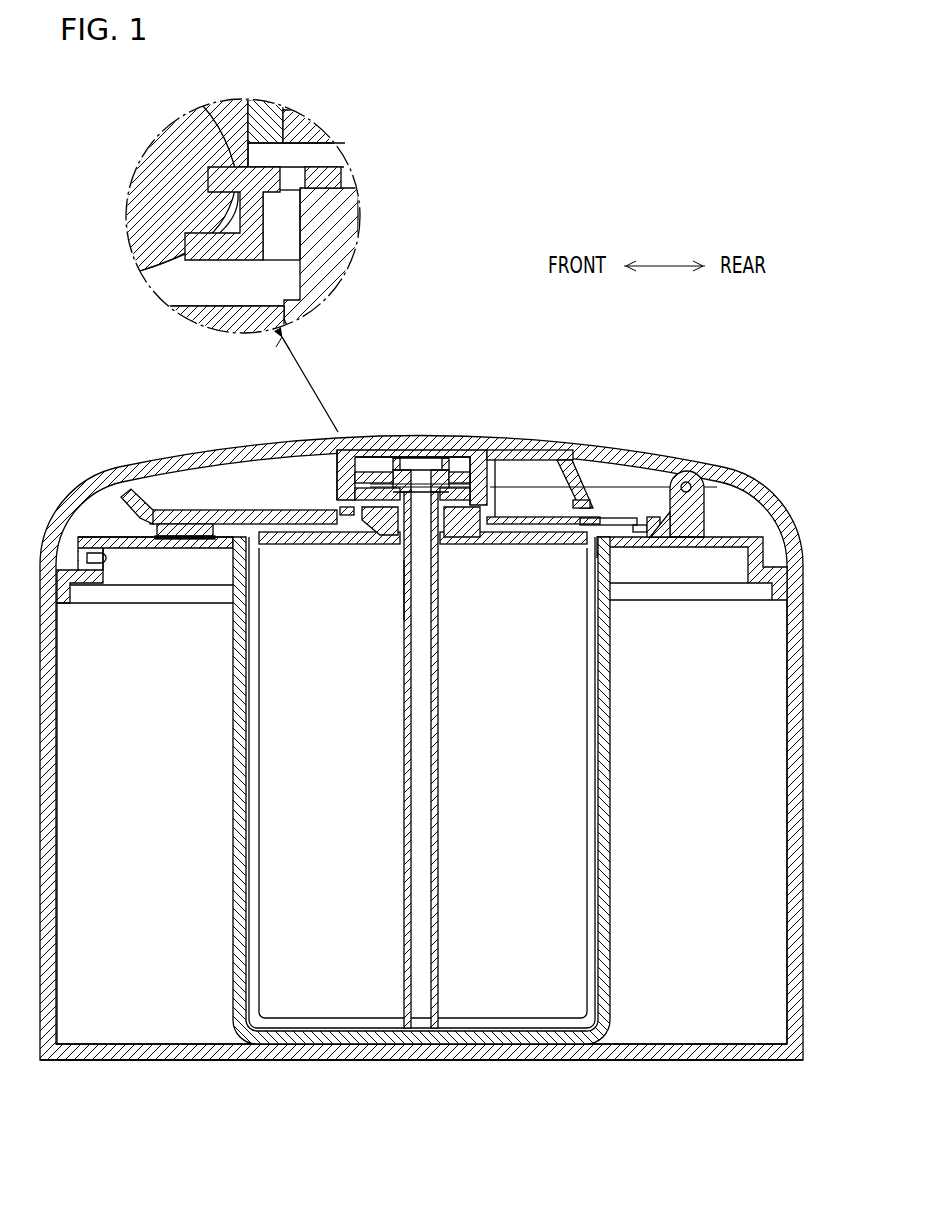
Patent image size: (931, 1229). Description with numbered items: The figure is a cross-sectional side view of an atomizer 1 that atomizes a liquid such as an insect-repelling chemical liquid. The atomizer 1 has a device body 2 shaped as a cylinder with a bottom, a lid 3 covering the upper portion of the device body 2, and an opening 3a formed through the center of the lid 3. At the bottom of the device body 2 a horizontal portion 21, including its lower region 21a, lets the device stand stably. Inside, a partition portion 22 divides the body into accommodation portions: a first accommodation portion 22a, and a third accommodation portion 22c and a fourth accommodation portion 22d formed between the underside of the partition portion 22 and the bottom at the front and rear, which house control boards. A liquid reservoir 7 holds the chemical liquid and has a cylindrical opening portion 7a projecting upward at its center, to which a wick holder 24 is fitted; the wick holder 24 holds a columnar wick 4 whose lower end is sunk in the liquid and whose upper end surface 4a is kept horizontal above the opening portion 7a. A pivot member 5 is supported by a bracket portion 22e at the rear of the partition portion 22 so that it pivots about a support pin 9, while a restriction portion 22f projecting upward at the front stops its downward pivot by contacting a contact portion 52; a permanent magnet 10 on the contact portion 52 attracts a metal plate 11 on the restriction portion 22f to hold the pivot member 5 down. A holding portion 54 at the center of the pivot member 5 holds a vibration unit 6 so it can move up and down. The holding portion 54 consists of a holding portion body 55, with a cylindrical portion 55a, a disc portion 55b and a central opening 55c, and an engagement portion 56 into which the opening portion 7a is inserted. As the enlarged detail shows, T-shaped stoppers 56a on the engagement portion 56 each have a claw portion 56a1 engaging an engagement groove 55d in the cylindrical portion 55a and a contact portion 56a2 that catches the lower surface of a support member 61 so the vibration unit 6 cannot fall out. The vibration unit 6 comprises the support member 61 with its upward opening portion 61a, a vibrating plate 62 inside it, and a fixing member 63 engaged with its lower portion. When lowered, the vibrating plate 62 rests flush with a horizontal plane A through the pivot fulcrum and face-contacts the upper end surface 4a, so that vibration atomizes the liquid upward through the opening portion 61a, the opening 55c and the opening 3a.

The atomizer 1 is at (726, 424).
The device body 2 is at (583, 1062).
The lid 3 is at (776, 484).
The opening 3a is at (468, 448).
The wick 4 is at (438, 651).
The upper end surface 4a is at (420, 492).
The pivot member 5 is at (249, 508).
The vibration unit 6 is at (368, 478).
The liquid reservoir 7 is at (296, 532).
The opening portion 7a is at (455, 540).
The support pin 9 is at (692, 484).
The permanent magnet 10 is at (185, 528).
The metal plate 11 is at (205, 535).
The horizontal portion 21 is at (652, 1060).
The bottom plate inner portion 21a is at (470, 1061).
The partition portion 22 is at (75, 538).
The first accommodation portion 22a is at (245, 598).
The third accommodation portion 22c is at (206, 689).
The fourth accommodation portion 22d is at (683, 689).
The bracket portion 22e is at (688, 480).
The restriction portion 22f is at (102, 535).
The wick holder 24 is at (404, 589).
The contact portion 52 is at (163, 514).
The holding portion 54 is at (505, 450).
The holding portion body 55 is at (425, 354).
The cylindrical portion 55a is at (347, 447).
The disc portion 55b is at (388, 448).
The opening 55c is at (440, 484).
The engagement groove 55d is at (212, 185).
The engagement portion 56 is at (522, 520).
The stopper 56a is at (270, 218).
The claw portion 56a1 is at (232, 185).
The contact portion 56a2 is at (275, 178).
The support member 61 is at (272, 122).
The opening portion 61a is at (420, 486).
The vibrating plate 62 is at (426, 468).
The fixing member 63 is at (300, 143).
The horizontal plane A is at (630, 486).